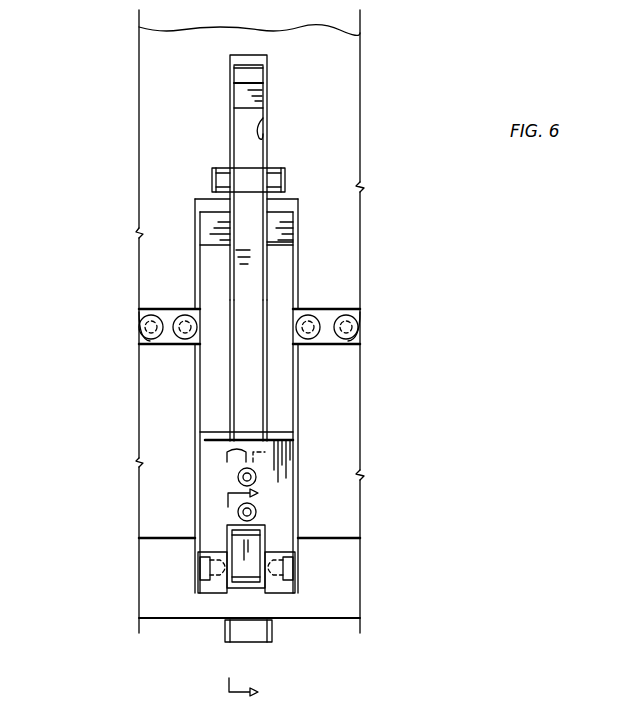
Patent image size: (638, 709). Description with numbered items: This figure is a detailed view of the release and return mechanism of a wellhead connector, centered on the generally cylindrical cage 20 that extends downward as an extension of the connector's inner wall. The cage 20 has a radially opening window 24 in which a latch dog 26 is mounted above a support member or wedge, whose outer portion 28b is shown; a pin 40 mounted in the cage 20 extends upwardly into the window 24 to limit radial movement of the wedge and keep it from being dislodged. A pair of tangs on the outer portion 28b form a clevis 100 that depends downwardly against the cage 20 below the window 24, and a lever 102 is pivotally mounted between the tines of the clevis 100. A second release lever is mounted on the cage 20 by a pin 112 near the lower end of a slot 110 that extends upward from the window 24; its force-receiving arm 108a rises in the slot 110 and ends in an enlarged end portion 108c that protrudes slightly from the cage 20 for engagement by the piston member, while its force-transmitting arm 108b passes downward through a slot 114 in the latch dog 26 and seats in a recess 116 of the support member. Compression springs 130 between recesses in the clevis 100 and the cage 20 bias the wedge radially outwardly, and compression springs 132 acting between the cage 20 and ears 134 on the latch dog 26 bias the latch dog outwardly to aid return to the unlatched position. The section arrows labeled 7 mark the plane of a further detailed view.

The cage 20 is at (340, 158).
The window 24 is at (197, 254).
The latch dog 26 is at (283, 257).
The outer portion 28b is at (297, 455).
The pin 40 is at (228, 637).
The clevis 100 is at (220, 590).
The lever 102 is at (295, 530).
The force-receiving arm 108a is at (243, 130).
The force-transmitting arm 108b is at (248, 390).
The enlarged end portion 108c is at (262, 67).
The slot 110 is at (263, 120).
The pin 112 is at (212, 176).
The slot 114 is at (243, 352).
The recess 116 is at (228, 455).
The compression spring 130 is at (205, 555).
The compression spring 132 is at (178, 312).
The ear 134 is at (180, 340).
The section line 7- 7 is at (250, 595).